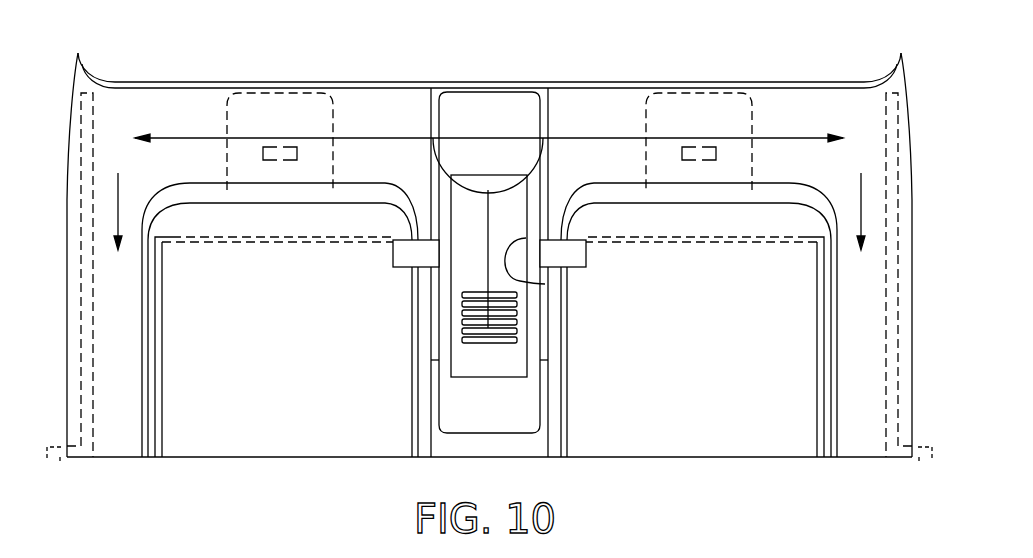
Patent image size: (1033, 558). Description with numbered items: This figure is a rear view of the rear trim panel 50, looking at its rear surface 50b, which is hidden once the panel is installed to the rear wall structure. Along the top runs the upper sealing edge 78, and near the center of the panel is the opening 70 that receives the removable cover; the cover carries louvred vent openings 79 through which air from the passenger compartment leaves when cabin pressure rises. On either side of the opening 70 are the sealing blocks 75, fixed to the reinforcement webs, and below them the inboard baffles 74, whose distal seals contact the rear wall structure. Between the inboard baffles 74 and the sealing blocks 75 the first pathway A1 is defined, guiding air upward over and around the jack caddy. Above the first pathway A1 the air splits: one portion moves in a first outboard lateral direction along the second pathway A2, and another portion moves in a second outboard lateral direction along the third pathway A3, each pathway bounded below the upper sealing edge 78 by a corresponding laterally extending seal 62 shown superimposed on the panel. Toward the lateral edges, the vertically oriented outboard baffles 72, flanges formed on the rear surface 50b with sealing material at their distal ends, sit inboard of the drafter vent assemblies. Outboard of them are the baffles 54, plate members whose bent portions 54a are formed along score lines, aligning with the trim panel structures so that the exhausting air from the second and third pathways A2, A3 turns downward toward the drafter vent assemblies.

The rear trim panel 50 is at (593, 78).
The rear surface 50b is at (401, 116).
The baffle 54 is at (78, 363).
The bent portion 54a is at (60, 463).
The laterally extending seal 62 is at (288, 243).
The opening 70 is at (545, 284).
The outboard baffle 72 is at (162, 324).
The inboard baffle 74 is at (430, 327).
The sealing block 75 is at (405, 251).
The upper sealing edge 78 is at (359, 86).
The vent openings 79 is at (500, 328).
The first pathway A1 is at (487, 278).
The second pathway A2 is at (187, 137).
The third pathway A3 is at (788, 137).